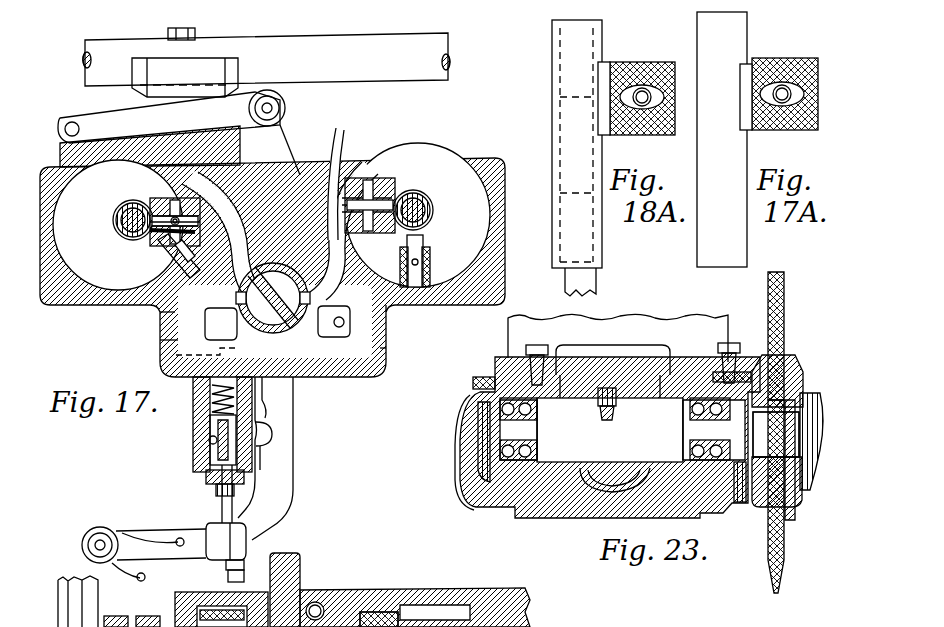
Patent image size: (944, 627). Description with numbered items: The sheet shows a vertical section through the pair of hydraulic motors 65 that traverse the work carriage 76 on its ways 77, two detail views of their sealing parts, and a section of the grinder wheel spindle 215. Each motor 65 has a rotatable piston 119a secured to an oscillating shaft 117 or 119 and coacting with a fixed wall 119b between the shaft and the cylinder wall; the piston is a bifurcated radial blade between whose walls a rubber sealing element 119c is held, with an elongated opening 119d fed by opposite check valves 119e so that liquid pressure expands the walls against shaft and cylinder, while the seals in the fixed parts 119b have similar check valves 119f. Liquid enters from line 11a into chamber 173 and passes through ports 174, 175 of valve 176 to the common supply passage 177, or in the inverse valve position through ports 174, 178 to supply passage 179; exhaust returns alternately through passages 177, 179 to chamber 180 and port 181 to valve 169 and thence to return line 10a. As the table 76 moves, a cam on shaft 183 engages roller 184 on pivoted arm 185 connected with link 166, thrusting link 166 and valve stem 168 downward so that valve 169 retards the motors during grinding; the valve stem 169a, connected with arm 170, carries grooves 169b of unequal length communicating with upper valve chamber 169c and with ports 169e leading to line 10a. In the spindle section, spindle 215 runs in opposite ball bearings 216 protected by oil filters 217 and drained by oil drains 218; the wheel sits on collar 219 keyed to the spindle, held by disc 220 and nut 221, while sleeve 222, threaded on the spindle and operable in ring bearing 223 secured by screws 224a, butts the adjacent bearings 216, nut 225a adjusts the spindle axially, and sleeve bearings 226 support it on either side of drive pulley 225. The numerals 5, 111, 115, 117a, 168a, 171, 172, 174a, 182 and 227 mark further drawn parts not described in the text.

In FIG. 23, the blade 5 is at (786, 552).
In FIG. 17, the return line 10a is at (273, 433).
In FIG. 17, the line 11a is at (386, 349).
In FIG. 17, the motor 65 is at (458, 150).
In FIG. 17, the work carriage 76 is at (308, 600).
In FIG. 17, the ways 77 is at (340, 626).
In FIG. 17, the coupling 111 is at (247, 545).
In FIG. 17, the bearing plate 115 is at (395, 605).
In FIG. 17, the oscillating shaft 117 is at (113, 216).
In FIG. 18A, the oscillating shaft 117 is at (598, 283).
In FIG. 17, the shaft 117a is at (432, 214).
In FIG. 17A, the shaft 117a is at (728, 256).
In FIG. 17, the oscillating shaft 119 is at (125, 208).
In FIG. 18A, the oscillating shaft 119 is at (603, 248).
In FIG. 17, the rotatable piston 119a is at (185, 268).
In FIG. 18A, the rotatable piston 119a is at (604, 64).
In FIG. 17A, the rotatable piston 119a is at (746, 62).
In FIG. 17, the fixed wall 119b is at (178, 205).
In FIG. 17, the flexible sealing device 119c is at (176, 200).
In FIG. 18A, the flexible sealing device 119c is at (673, 64).
In FIG. 17A, the flexible sealing device 119c is at (816, 60).
In FIG. 18A, the elongated opening 119d is at (668, 103).
In FIG. 17A, the elongated opening 119d is at (808, 100).
In FIG. 18A, the check valve 119e is at (643, 108).
In FIG. 17A, the check valve 119e is at (783, 105).
In FIG. 17, the check valve 119f is at (172, 200).
In FIG. 17, the link 166 is at (265, 522).
In FIG. 17, the valve stem 168 is at (206, 474).
In FIG. 17, the lower nut 168a is at (246, 578).
In FIG. 17, the valve 169 is at (236, 462).
In FIG. 17, the valve stem 169a is at (268, 412).
In FIG. 17, the axially extended grooves 169b is at (212, 425).
In FIG. 17, the upper valve chamber 169c is at (195, 386).
In FIG. 17, the ports 169e is at (262, 452).
In FIG. 17, the arm 170 is at (200, 562).
In FIG. 17, the lever pivot 171 is at (110, 528).
In FIG. 17, the lever spring 172 is at (166, 540).
In FIG. 17, the chamber 173 is at (385, 333).
In FIG. 17, the port 174 is at (380, 312).
In FIG. 17, the body wall 174a is at (168, 318).
In FIG. 17, the port 175 is at (262, 378).
In FIG. 17, the valve 176 is at (340, 168).
In FIG. 17, the common supply passage 177 is at (172, 342).
In FIG. 17, the port 178 is at (298, 150).
In FIG. 17, the supply passage 179 is at (316, 170).
In FIG. 17, the chamber 180 is at (257, 301).
In FIG. 17, the port 181 is at (176, 356).
In FIG. 17, the clamp block 182 is at (190, 68).
In FIG. 17, the shaft 183 is at (320, 18).
In FIG. 17, the roller 184 is at (285, 99).
In FIG. 17, the pivoted arm 185 is at (169, 117).
In FIG. 23, the spindle 215 is at (622, 418).
In FIG. 23, the ball bearings 216 is at (490, 508).
In FIG. 23, the oil filter 217 is at (566, 358).
In FIG. 23, the oil drain 218 is at (742, 505).
In FIG. 23, the collar 219 is at (785, 335).
In FIG. 23, the disc 220 is at (796, 505).
In FIG. 23, the nut 221 is at (823, 460).
In FIG. 23, the sleeve 222 is at (777, 459).
In FIG. 23, the ring bearing 223 is at (808, 395).
In FIG. 23, the screws 224a is at (735, 370).
In FIG. 23, the drive pulley 225 is at (612, 492).
In FIG. 23, the nut 225a is at (465, 412).
In FIG. 23, the sleeve bearings 226 is at (596, 406).
In FIG. 23, the end cap 227 is at (474, 412).